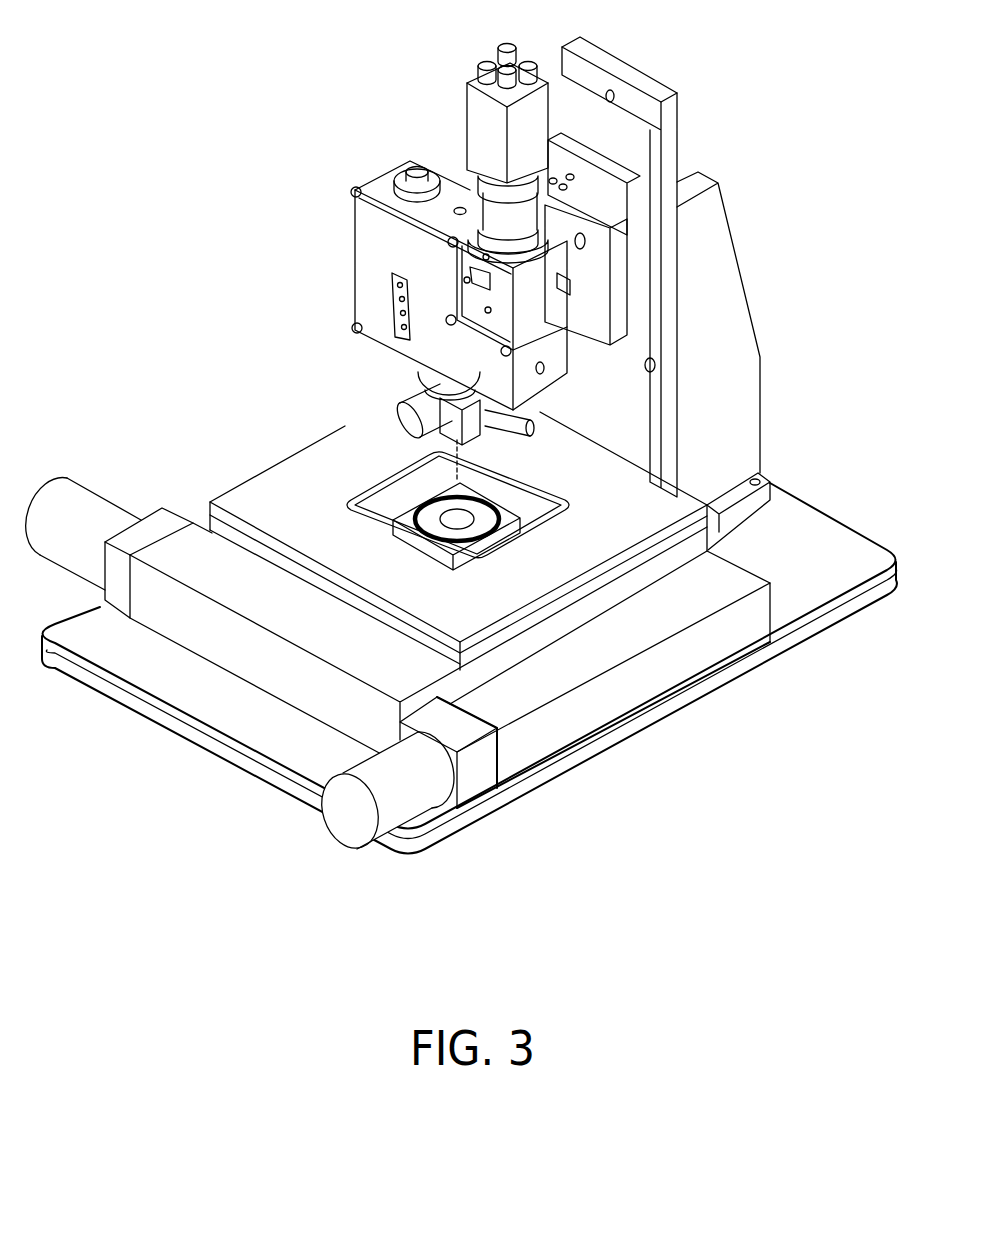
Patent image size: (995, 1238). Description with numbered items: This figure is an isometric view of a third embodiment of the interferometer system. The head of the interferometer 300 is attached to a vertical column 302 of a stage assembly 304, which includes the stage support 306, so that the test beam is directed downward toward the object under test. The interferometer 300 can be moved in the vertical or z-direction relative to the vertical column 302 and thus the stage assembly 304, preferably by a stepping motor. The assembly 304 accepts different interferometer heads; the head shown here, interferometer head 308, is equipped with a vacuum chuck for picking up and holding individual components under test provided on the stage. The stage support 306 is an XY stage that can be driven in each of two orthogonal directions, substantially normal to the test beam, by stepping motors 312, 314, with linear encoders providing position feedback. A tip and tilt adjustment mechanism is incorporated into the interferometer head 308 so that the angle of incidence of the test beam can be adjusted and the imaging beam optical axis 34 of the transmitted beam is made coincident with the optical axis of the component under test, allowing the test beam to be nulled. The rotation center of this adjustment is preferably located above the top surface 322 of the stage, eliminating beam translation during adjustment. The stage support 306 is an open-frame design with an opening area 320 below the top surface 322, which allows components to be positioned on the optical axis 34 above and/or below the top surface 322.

The interferometer 300 is at (347, 257).
The vertical column 302 is at (647, 342).
The stage assembly 304 is at (840, 510).
The stage support 306 is at (590, 597).
The interferometer head 308 is at (533, 437).
The stepping motor 312 is at (75, 493).
The stepping motor 314 is at (310, 766).
The opening area 320 is at (345, 510).
The top surface 322 is at (663, 507).
The imaging beam optical axis 34 is at (457, 478).